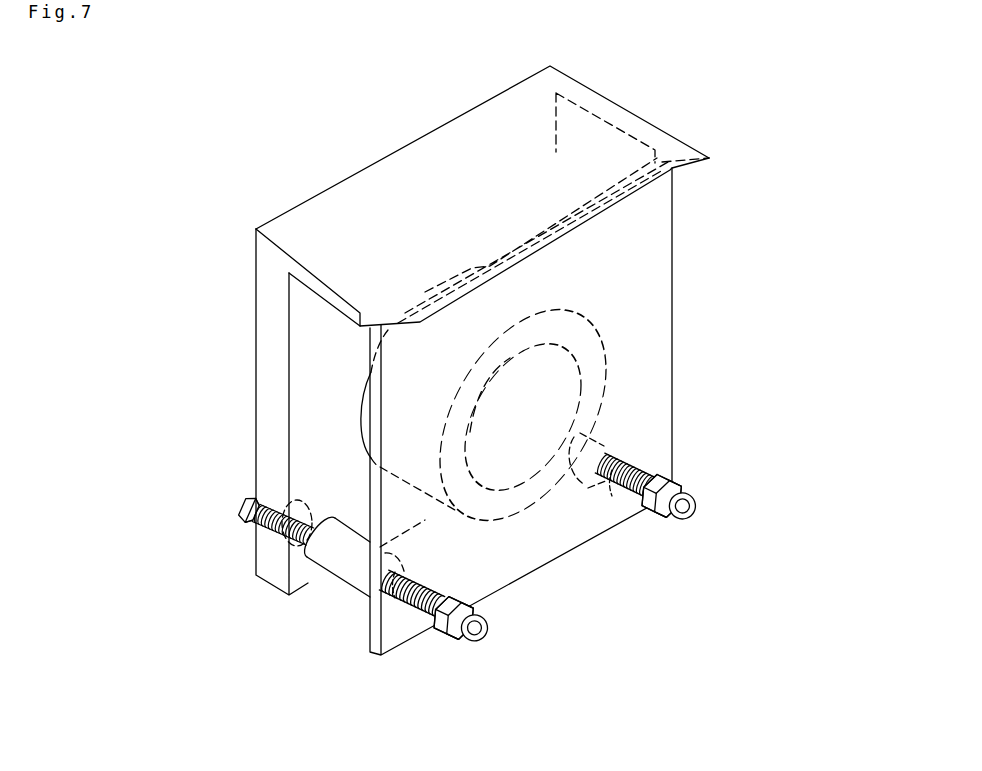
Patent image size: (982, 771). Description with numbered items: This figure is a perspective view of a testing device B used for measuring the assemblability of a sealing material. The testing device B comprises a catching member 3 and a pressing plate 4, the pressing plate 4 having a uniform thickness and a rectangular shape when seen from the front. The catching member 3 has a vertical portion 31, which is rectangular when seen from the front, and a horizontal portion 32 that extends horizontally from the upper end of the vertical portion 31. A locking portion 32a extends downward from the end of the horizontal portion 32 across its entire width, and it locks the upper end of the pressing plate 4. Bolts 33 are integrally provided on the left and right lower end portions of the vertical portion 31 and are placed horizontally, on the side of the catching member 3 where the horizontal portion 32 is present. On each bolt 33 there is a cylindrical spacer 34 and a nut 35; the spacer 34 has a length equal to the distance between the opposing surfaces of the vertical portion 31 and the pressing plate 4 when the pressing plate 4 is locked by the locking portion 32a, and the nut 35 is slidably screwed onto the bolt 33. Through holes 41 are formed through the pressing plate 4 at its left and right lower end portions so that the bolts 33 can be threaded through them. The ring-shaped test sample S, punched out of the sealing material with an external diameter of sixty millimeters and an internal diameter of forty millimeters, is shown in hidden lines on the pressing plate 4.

The testing device B is at (209, 82).
The catching member 3 is at (232, 360).
The vertical portion 31 is at (265, 415).
The horizontal portion 32 is at (407, 162).
The locking portion 32a is at (358, 318).
The pressing plate 4 is at (667, 305).
The test sample S is at (600, 387).
The bolt 33 is at (437, 593).
The cylindrical spacer 34 is at (338, 572).
The nut 35 is at (273, 547).
The through hole 41 is at (413, 610).